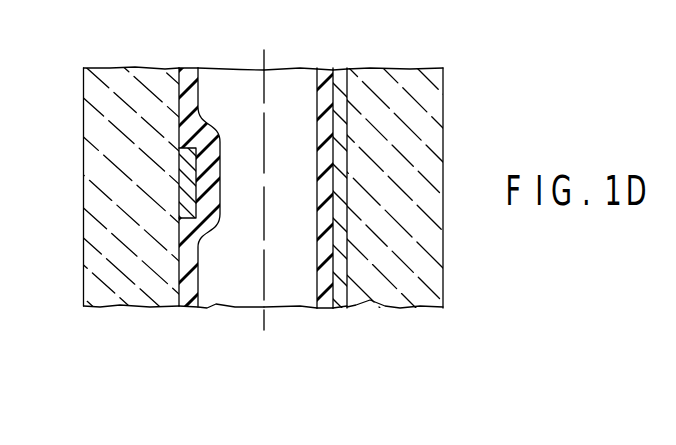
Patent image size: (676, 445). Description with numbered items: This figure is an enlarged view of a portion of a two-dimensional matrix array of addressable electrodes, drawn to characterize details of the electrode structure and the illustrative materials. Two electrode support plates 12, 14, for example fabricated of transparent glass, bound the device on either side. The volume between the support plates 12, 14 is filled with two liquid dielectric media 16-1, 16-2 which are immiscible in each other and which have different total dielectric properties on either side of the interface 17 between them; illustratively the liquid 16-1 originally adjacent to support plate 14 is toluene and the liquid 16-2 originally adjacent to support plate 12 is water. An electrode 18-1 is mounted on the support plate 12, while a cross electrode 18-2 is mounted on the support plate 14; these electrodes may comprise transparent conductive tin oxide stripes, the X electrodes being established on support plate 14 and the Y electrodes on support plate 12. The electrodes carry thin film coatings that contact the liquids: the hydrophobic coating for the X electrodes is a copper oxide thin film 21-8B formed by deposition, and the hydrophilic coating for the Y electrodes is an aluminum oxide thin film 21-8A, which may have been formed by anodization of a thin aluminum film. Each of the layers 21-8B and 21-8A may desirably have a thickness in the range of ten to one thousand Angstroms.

The electrode support plate 12 is at (410, 80).
The electrode support plate 14 is at (115, 78).
The liquid dielectric medium 16-1 is at (285, 277).
The liquid dielectric medium 16-2 is at (238, 277).
The interface 17 is at (263, 63).
The electrode 18-1 is at (338, 69).
The cross electrode 18-2 is at (186, 154).
The aluminum oxide thin film 21-8A is at (322, 69).
The copper oxide thin film 21-8B is at (188, 69).